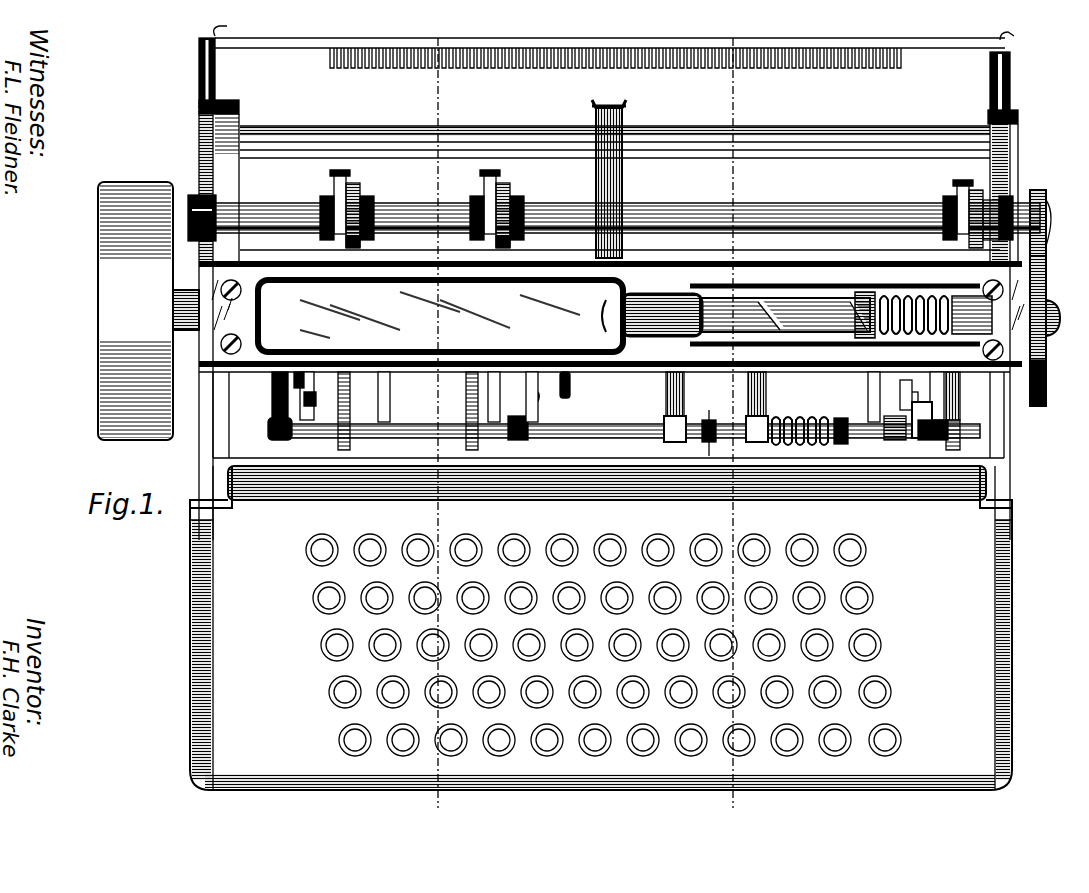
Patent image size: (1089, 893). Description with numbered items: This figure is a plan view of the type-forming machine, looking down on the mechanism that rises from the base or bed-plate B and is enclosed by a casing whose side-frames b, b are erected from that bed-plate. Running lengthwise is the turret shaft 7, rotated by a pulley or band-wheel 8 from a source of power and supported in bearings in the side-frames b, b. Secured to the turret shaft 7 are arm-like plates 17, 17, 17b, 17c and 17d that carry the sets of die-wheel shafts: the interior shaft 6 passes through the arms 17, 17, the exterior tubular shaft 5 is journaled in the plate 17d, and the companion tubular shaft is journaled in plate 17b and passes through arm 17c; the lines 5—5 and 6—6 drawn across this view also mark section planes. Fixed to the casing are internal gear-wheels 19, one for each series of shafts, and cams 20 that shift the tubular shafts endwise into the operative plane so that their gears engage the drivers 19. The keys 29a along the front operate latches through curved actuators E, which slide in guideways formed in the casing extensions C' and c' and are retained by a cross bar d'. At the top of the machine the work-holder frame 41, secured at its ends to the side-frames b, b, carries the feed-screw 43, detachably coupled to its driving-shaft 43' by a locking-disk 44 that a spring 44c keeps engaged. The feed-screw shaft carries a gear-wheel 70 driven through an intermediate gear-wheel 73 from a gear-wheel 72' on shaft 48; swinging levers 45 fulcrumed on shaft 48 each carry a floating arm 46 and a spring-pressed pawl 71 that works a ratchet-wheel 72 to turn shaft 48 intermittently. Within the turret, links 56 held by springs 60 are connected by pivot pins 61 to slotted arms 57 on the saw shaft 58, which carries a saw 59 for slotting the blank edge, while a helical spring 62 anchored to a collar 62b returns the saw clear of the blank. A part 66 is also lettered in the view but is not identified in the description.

The tubular shaft 5 is at (470, 800).
The interior shaft 6 is at (760, 800).
The actuator E is at (614, 56).
The cross bar d' is at (297, 60).
The casing extension c' is at (219, 76).
The casing extension C' is at (996, 88).
The shaft 48 is at (786, 218).
The swinging lever 45 is at (340, 172).
The floating arm 46 is at (336, 186).
The spring-pressed pawl 71 is at (362, 190).
The ratchet-wheel 72 is at (681, 219).
The gear-wheel 72' is at (1058, 219).
The spring 60 is at (520, 352).
The work-holder frame 41 is at (768, 272).
The feed-screw 43 is at (835, 291).
The locking-disk 44 is at (870, 290).
The spring 44c is at (915, 290).
The intermediate gear-wheel 73 is at (1046, 290).
The turret shaft 7 is at (1058, 322).
The gear-wheel 70 is at (1038, 366).
The pulley or band-wheel 8 is at (112, 310).
The saw shaft 58 is at (630, 440).
The arm 17 is at (275, 392).
The arm-like plate 17b is at (490, 398).
The arm 17c is at (668, 396).
The arm-like plate 17d is at (766, 410).
The arm 57 is at (280, 432).
The link 56 is at (306, 378).
The pivot pin 61 is at (316, 396).
The cam 20 is at (392, 396).
The internal gear-wheel 19 is at (340, 402).
The saw 59 is at (704, 425).
The helical spring 62 is at (804, 420).
The collar 62b is at (840, 446).
The driving-shaft 43' is at (894, 391).
The block 66 is at (914, 420).
The side-frame b is at (196, 446).
The bed-plate B is at (603, 632).
The key 29a is at (586, 538).